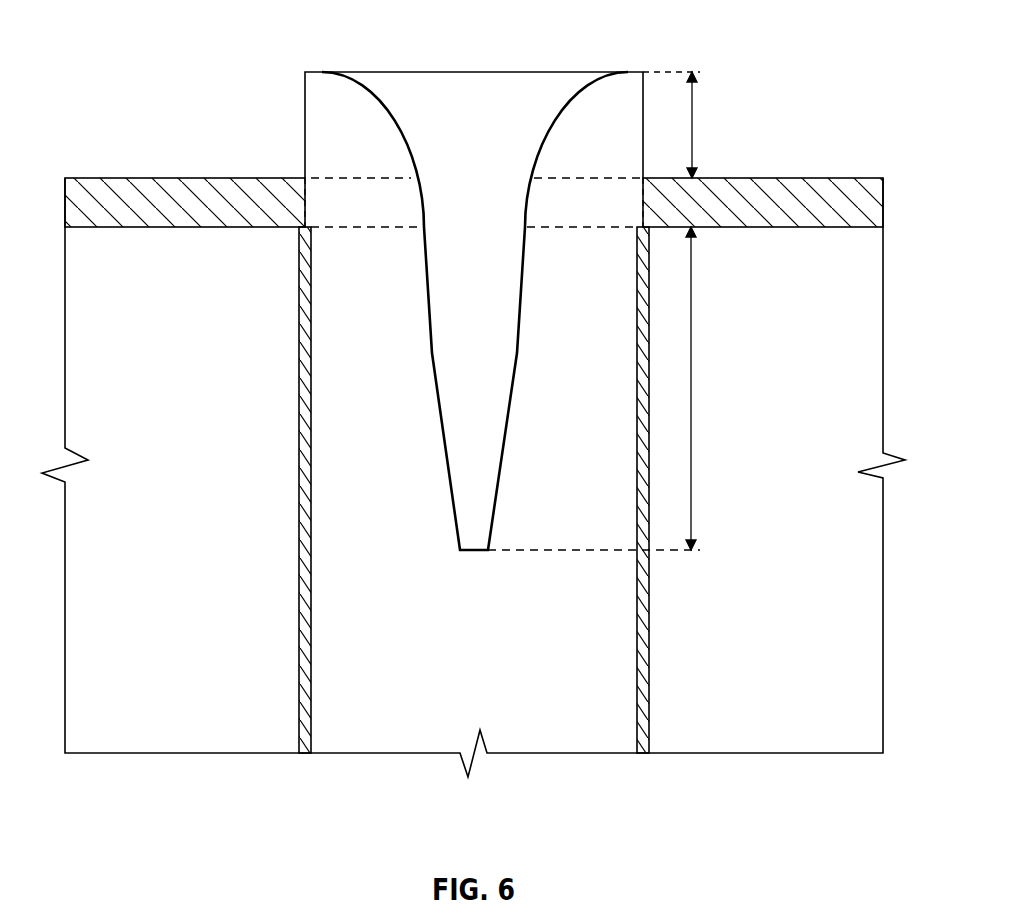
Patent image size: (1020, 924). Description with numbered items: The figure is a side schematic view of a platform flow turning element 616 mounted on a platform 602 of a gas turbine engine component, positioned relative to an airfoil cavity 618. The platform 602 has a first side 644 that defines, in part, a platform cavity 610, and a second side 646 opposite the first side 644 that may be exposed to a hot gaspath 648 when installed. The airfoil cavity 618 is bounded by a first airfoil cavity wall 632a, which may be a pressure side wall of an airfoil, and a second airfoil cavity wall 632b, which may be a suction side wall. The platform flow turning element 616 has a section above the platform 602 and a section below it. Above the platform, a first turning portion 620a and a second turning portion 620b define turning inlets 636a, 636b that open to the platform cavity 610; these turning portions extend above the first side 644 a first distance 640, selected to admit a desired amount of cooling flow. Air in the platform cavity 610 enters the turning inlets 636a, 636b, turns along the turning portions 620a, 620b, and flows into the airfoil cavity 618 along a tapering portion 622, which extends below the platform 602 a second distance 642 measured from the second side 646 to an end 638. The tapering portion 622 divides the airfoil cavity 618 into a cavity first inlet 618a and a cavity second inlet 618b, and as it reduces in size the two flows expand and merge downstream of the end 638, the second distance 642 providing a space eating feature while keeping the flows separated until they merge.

The platform 602 is at (140, 203).
The platform cavity 610 is at (277, 162).
The platform flow turning element 616 is at (392, 72).
The airfoil cavity 618 is at (497, 717).
The cavity first inlet 618a is at (405, 462).
The cavity second inlet 618b is at (605, 462).
The first turning portion 620a is at (411, 150).
The second turning portion 620b is at (556, 113).
The tapering portion 622 is at (453, 383).
The first airfoil cavity wall 632a is at (298, 683).
The second airfoil cavity wall 632b is at (650, 683).
The turning inlet 636a is at (376, 165).
The turning inlet 636b is at (632, 165).
The end 638 is at (470, 553).
The first distance 640 is at (692, 118).
The second distance 642 is at (691, 387).
The first side 644 is at (176, 170).
The second side 646 is at (198, 238).
The hot gaspath 648 is at (228, 507).